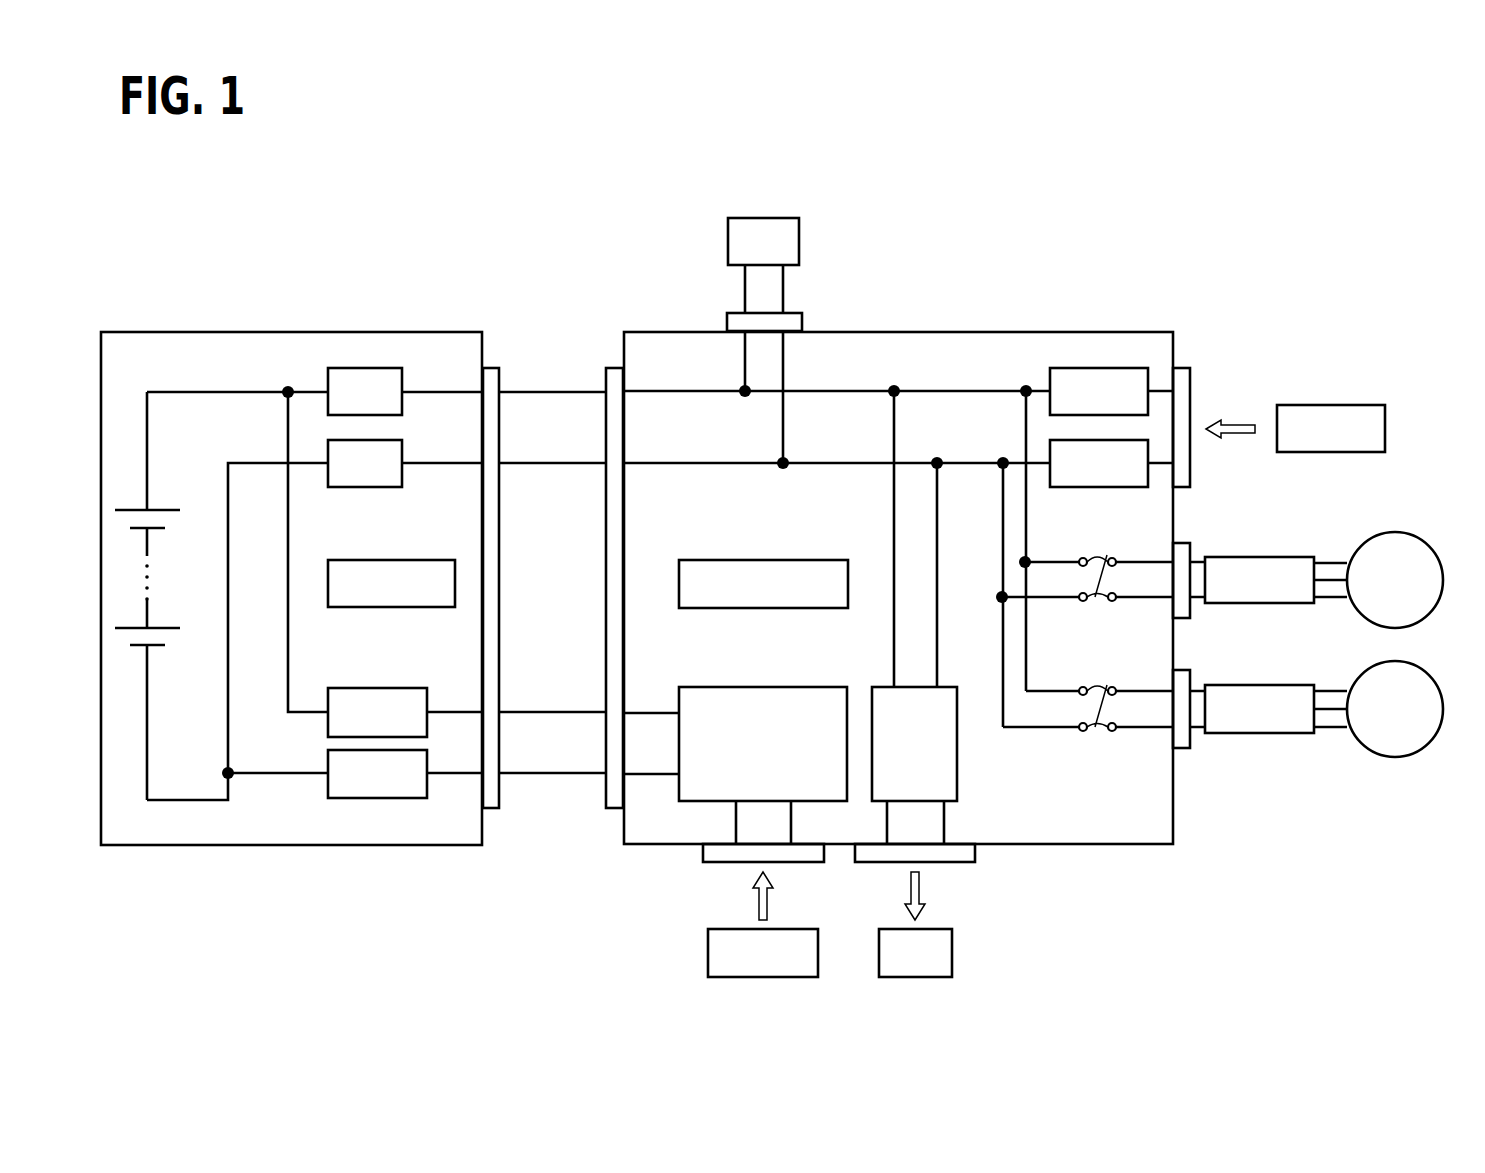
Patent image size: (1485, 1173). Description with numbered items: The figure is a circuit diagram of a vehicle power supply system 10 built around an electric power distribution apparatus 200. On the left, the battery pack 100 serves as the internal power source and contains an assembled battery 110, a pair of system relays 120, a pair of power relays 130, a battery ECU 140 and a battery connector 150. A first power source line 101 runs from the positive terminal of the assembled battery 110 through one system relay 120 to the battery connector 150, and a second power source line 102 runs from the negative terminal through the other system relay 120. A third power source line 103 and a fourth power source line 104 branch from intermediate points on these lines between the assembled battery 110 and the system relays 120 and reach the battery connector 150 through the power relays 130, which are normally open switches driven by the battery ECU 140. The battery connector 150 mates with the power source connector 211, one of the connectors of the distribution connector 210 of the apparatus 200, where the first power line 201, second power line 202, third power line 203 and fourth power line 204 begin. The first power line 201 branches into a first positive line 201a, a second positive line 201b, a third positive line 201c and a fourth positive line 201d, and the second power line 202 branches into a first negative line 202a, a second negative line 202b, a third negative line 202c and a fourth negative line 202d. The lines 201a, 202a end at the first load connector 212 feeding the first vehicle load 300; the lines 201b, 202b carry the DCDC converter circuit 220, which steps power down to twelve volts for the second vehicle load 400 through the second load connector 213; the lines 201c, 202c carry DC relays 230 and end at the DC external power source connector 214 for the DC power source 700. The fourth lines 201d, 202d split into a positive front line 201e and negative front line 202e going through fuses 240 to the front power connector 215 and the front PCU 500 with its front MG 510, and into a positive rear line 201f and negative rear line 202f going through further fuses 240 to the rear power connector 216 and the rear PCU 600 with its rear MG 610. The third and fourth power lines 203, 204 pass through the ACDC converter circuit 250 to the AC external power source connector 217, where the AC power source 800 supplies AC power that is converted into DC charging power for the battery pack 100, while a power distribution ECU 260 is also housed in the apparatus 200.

The vehicle power supply system 10 is at (1293, 237).
The battery pack 100 is at (468, 332).
The first power source line 101 is at (180, 391).
The second power source line 102 is at (174, 799).
The third power source line 103 is at (289, 527).
The fourth power source line 104 is at (254, 772).
The assembled battery 110 is at (162, 506).
The system relay 120 is at (404, 376).
The power relay 130 is at (418, 688).
The battery ECU 140 is at (414, 560).
The battery connector 150 is at (497, 367).
The electric power distribution apparatus 200 is at (1158, 331).
The first power line 201 is at (674, 388).
The first positive line 201a is at (741, 384).
The second positive line 201b is at (892, 432).
The third positive line 201c is at (1040, 384).
The fourth positive line 201d is at (1018, 554).
The positive front line 201e is at (1048, 561).
The positive rear line 201f is at (1048, 690).
The second power line 202 is at (674, 460).
The first negative line 202a is at (786, 378).
The second negative line 202b is at (938, 668).
The third negative line 202c is at (1042, 458).
The fourth negative line 202d is at (996, 591).
The negative front line 202e is at (1058, 598).
The negative rear line 202f is at (1038, 728).
The third power line 203 is at (646, 712).
The fourth power line 204 is at (648, 773).
The distribution connector 210 is at (1240, 318).
The power source connector 211 is at (612, 367).
The first load connector 212 is at (804, 324).
The second load connector 213 is at (976, 858).
The DC external power source connector 214 is at (1186, 367).
The front power connector 215 is at (1186, 542).
The rear power connector 216 is at (1186, 669).
The AC external power source connector 217 is at (702, 858).
The DCDC converter circuit 220 is at (878, 686).
The DC relay 230 is at (1050, 372).
The fuse 240 is at (1094, 557).
The ACDC converter circuit 250 is at (698, 687).
The power distribution ECU 260 is at (698, 560).
The first vehicle load 300 is at (788, 217).
The second vehicle load 400 is at (943, 928).
The front PCU 500 is at (1298, 556).
The front MG 510 is at (1426, 542).
The rear PCU 600 is at (1298, 684).
The rear MG 610 is at (1426, 670).
The DC power source 700 is at (1368, 405).
The AC power source 800 is at (810, 928).